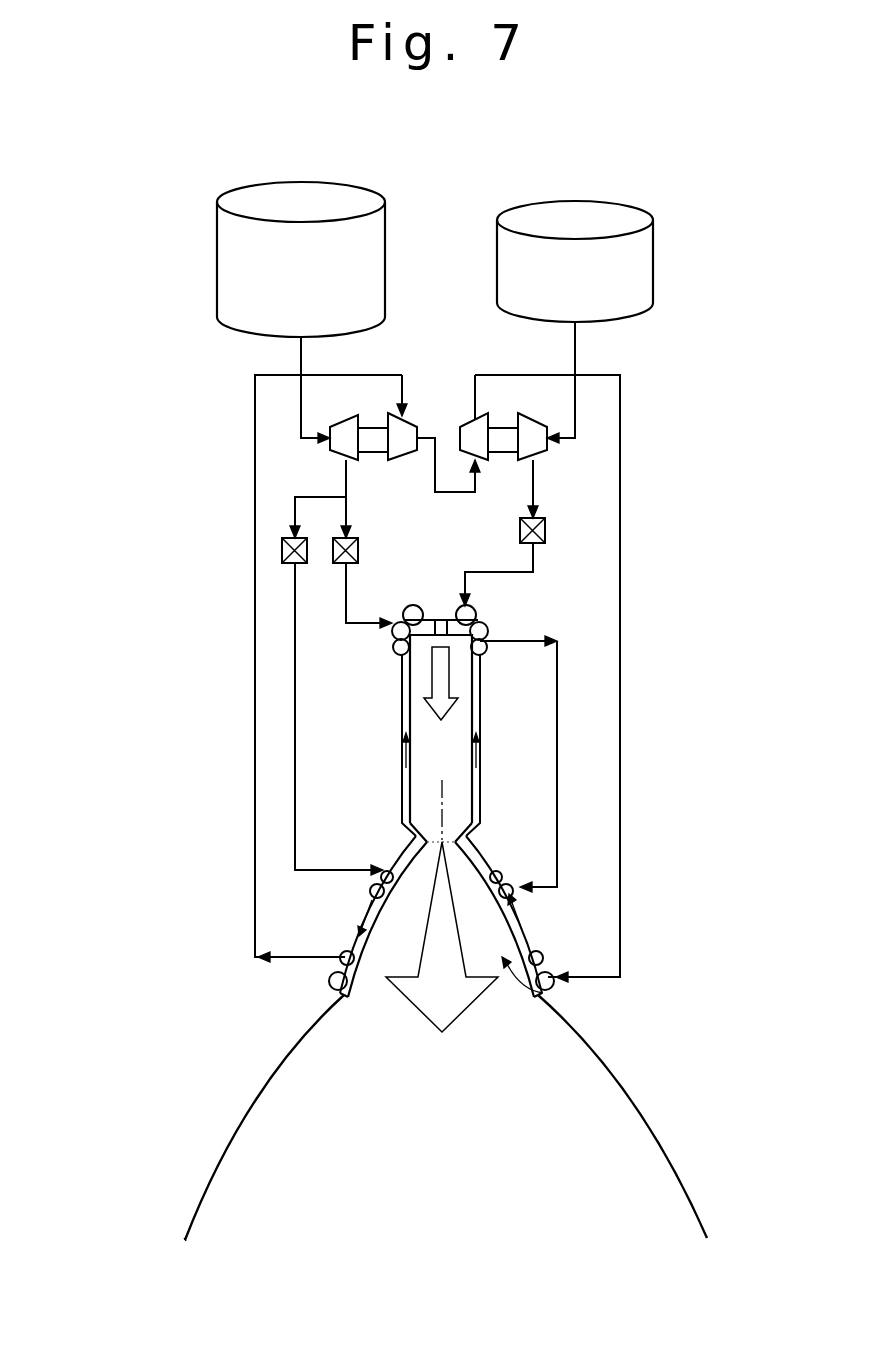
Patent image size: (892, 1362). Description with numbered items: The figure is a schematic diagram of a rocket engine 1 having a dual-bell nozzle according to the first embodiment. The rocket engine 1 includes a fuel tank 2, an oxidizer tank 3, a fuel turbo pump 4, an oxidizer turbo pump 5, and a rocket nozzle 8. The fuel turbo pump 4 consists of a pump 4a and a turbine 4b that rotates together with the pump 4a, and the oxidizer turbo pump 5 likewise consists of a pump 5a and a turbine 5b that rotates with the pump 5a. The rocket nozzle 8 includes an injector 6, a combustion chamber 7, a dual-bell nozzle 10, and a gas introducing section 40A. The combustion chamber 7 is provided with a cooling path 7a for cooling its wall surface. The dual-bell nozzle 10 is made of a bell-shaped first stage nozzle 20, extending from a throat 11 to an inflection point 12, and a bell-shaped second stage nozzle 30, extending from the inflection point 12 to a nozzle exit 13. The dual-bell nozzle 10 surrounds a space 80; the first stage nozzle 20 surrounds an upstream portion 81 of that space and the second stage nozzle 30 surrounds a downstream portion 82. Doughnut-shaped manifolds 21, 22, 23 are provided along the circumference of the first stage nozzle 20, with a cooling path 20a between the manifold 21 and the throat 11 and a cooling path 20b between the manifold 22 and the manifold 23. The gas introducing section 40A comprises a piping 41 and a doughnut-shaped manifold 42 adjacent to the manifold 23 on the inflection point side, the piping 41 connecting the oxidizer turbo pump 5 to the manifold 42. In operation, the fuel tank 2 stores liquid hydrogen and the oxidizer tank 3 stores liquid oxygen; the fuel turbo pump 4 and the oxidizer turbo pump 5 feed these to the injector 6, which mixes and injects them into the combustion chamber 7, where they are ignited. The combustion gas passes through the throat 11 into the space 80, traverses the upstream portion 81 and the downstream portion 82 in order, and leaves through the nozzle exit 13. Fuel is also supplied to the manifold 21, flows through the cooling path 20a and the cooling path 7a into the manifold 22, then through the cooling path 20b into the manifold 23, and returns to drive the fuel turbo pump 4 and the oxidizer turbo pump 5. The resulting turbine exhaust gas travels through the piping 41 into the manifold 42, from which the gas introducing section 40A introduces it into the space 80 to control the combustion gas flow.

The rocket engine 1 is at (433, 186).
The fuel tank 2 is at (218, 256).
The oxidizer tank 3 is at (653, 268).
The fuel turbo pump 4 is at (379, 392).
The pump 4a is at (335, 420).
The turbine 4b is at (408, 425).
The oxidizer turbo pump 5 is at (523, 390).
The pump 5a is at (545, 420).
The turbine 5b is at (458, 428).
The injector 6 is at (425, 606).
The combustion chamber 7 is at (230, 635).
The cooling path 7a is at (403, 714).
The rocket nozzle 8 is at (82, 845).
The dual-bell nozzle 10 is at (108, 898).
The throat 11 is at (413, 838).
The inflection point 12 is at (336, 993).
The nozzle exit 13 is at (185, 1238).
The first stage nozzle 20 is at (230, 833).
The cooling path 20a is at (407, 858).
The cooling path 20b is at (357, 933).
The manifold 21 is at (497, 868).
The manifold 22 is at (513, 880).
The manifold 23 is at (537, 950).
The second stage nozzle 30 is at (166, 997).
The gas introducing section 40A is at (648, 945).
The piping 41 is at (621, 810).
The manifold 42 is at (552, 973).
The space 80 is at (727, 973).
The upstream portion 81 is at (560, 1010).
The downstream portion 82 is at (620, 1155).